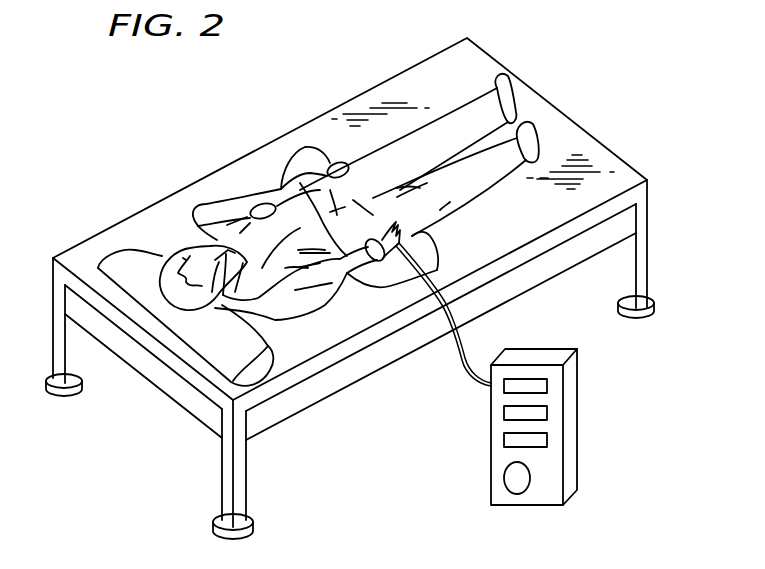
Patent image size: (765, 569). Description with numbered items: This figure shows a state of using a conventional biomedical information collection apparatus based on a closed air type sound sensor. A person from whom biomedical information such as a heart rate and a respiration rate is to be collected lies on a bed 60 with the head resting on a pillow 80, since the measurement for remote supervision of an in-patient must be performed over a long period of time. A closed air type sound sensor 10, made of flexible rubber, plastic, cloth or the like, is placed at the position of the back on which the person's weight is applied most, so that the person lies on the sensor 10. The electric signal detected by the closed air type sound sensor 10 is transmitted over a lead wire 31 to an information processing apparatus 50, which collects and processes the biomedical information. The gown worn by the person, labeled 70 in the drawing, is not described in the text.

The closed air type sound sensor 10 is at (332, 300).
The lead wire 31 is at (457, 353).
The information processing apparatus 50 is at (578, 415).
The bed 60 is at (567, 130).
The gown 70 is at (290, 193).
The pillow 80 is at (127, 260).